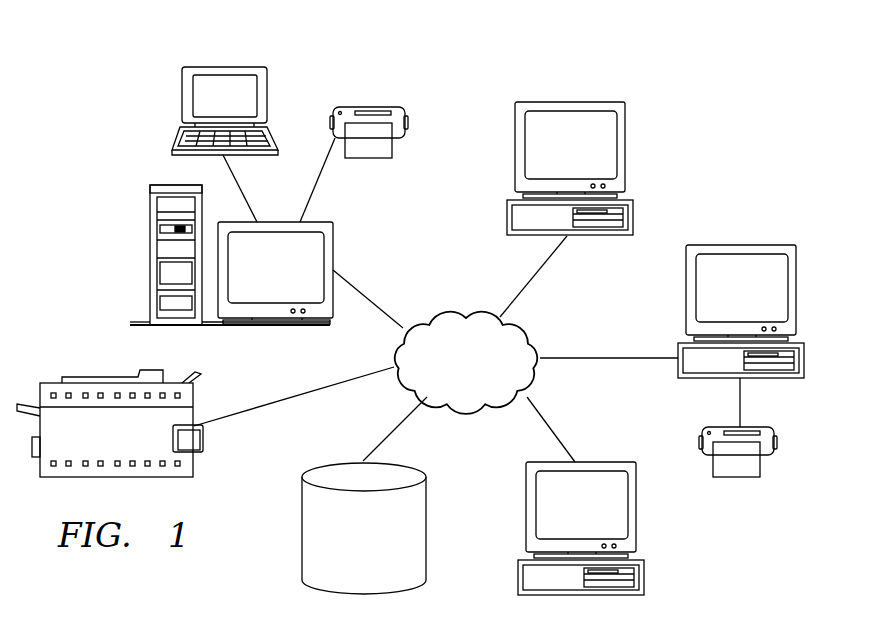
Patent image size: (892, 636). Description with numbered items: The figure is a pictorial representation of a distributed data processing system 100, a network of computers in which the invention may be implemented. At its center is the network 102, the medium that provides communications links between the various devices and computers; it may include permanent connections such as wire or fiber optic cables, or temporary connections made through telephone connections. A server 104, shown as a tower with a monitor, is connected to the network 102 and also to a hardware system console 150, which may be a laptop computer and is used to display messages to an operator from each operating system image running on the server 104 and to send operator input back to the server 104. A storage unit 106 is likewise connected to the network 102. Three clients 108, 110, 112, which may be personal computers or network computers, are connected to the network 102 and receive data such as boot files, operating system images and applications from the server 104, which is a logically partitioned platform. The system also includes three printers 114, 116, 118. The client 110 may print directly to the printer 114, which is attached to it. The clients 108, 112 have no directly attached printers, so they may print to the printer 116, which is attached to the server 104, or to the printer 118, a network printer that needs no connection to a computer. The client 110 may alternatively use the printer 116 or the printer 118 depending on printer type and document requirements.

The distributed data processing system 100 is at (728, 166).
The network 102 is at (451, 370).
The server 104 is at (262, 275).
The storage unit 106 is at (351, 539).
The client 108 is at (556, 152).
The client 110 is at (727, 296).
The client 112 is at (568, 511).
The printer 114 is at (776, 443).
The printer 116 is at (407, 123).
The printer 118 is at (98, 443).
The hardware system console 150 is at (182, 95).